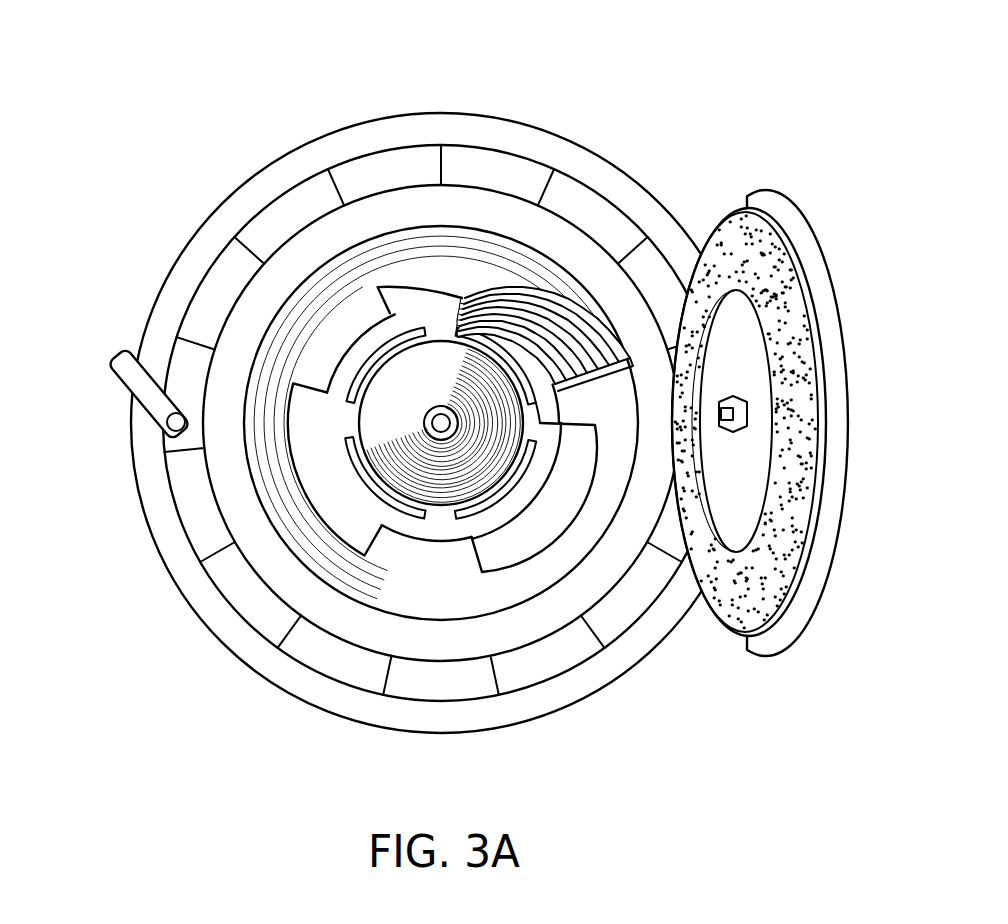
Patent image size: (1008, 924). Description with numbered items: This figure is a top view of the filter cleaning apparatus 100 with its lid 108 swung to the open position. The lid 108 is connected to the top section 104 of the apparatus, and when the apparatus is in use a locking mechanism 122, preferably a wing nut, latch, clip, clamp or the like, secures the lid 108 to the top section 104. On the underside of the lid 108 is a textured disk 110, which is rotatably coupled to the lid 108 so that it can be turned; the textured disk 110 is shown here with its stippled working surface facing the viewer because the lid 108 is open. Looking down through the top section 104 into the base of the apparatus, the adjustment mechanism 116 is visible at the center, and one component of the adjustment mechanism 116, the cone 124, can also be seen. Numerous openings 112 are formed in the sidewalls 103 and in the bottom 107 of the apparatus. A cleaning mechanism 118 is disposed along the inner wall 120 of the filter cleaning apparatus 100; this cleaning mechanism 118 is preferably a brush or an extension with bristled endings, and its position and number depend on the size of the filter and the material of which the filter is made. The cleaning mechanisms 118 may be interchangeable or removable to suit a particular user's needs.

The filter cleaning apparatus 100 is at (251, 42).
The sidewalls 103 is at (303, 330).
The top section 104 is at (240, 603).
The bottom 107 is at (541, 424).
The lid 108 is at (760, 432).
The textured disk 110 is at (740, 502).
The openings 112 is at (410, 290).
The adjustment mechanism 116 is at (444, 428).
The cleaning mechanism 118 is at (530, 297).
The inner wall 120 is at (346, 283).
The locking mechanism 122 is at (110, 359).
The cone 124 is at (418, 477).